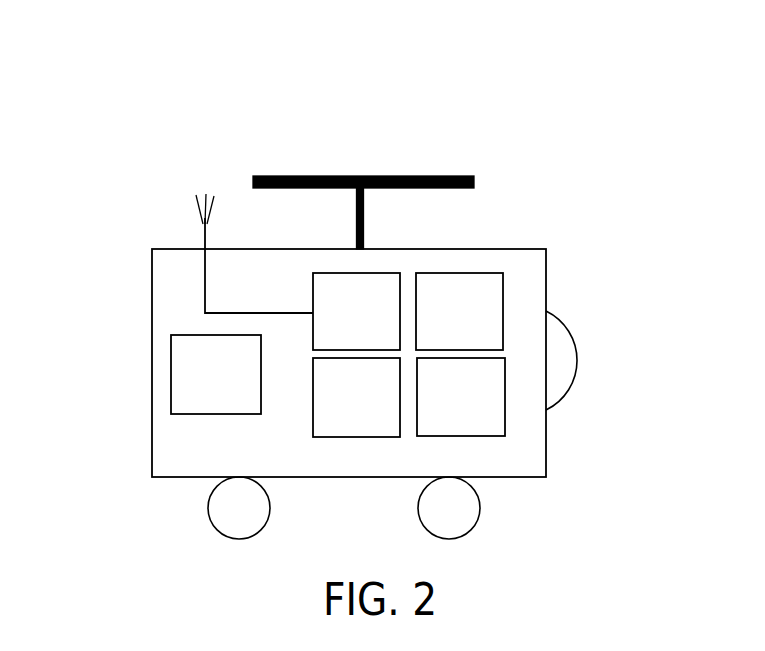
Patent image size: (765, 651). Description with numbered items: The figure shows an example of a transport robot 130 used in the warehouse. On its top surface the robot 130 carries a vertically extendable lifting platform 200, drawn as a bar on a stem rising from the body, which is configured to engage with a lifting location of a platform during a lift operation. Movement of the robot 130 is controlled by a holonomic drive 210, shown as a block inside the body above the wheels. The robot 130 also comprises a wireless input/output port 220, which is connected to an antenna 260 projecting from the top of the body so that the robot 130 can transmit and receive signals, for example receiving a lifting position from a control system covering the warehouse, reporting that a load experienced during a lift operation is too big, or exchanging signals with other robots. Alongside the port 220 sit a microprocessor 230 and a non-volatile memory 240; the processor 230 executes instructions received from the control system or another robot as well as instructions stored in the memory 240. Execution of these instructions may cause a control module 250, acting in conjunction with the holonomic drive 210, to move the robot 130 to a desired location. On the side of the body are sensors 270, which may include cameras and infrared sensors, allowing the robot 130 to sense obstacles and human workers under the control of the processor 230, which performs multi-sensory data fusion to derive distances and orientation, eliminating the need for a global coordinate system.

The robot 130 is at (573, 118).
The lifting platform 200 is at (263, 175).
The holonomic drive 210 is at (216, 374).
The wireless input/output port 220 is at (356, 311).
The microprocessor 230 is at (459, 311).
The non-volatile memory 240 is at (356, 397).
The control module 250 is at (461, 397).
The antenna 260 is at (195, 208).
The sensors 270 is at (567, 348).